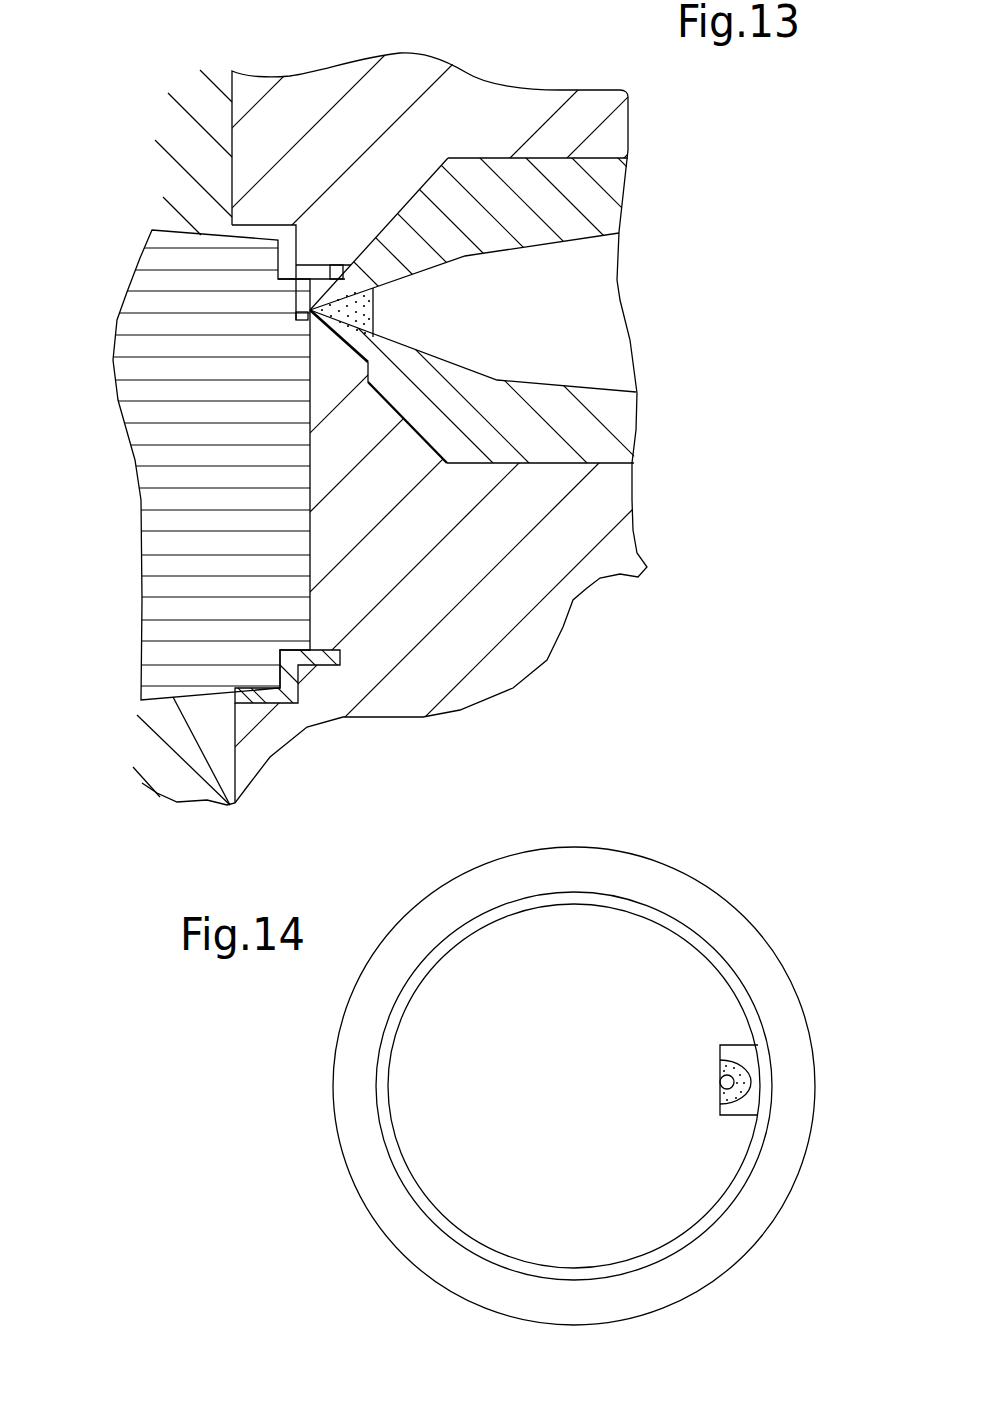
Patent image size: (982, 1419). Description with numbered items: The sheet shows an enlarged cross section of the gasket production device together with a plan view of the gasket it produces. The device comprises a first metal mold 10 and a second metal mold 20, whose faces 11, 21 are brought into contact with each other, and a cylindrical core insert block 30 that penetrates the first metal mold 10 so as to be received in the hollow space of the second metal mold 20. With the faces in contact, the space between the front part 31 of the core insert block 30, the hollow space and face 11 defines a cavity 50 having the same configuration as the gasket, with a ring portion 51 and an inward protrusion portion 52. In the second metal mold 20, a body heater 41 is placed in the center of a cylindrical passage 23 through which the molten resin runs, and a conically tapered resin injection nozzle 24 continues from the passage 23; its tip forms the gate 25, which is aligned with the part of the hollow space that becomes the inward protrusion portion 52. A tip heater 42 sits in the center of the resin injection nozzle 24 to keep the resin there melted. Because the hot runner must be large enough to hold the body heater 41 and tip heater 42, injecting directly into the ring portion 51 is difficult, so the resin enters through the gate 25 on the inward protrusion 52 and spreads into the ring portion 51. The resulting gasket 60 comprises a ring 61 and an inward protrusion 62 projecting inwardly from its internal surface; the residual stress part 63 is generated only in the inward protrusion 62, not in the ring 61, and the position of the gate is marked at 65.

In FIG. 13, the first metal mold 10 is at (188, 96).
In FIG. 13, the face 11 is at (310, 450).
In FIG. 13, the second metal mold 20 is at (428, 657).
In FIG. 13, the face 21 is at (313, 527).
In FIG. 13, the cylindrical passage 23 is at (542, 183).
In FIG. 13, the resin injection nozzle 24 is at (347, 277).
In FIG. 13, the gate 25 is at (305, 312).
In FIG. 13, the core insert block 30 is at (174, 652).
In FIG. 13, the front part 31 is at (273, 637).
In FIG. 13, the body heater 41 is at (465, 273).
In FIG. 13, the tip heater 42 is at (358, 311).
In FIG. 13, the cavity 50 is at (285, 210).
In FIG. 13, the ring portion 51 is at (247, 241).
In FIG. 13, the inward protrusion portion 52 is at (308, 317).
In FIG. 14, the gasket 60 is at (615, 1098).
In FIG. 14, the ring 61 is at (803, 1100).
In FIG. 14, the inward protrusion 62 is at (770, 1044).
In FIG. 14, the residual stress part 63 is at (720, 1045).
In FIG. 14, the position of gate 65 is at (720, 1082).